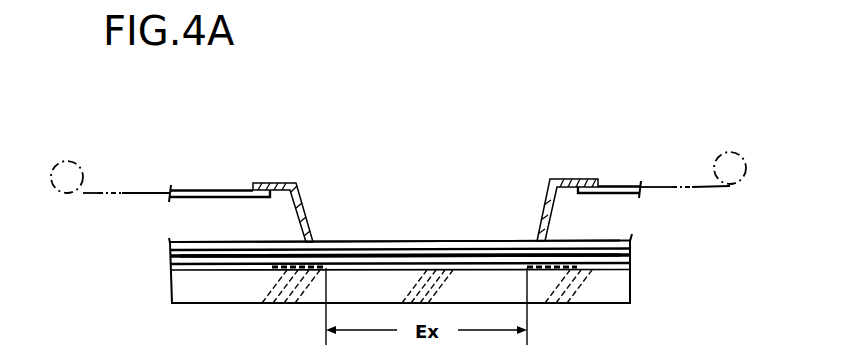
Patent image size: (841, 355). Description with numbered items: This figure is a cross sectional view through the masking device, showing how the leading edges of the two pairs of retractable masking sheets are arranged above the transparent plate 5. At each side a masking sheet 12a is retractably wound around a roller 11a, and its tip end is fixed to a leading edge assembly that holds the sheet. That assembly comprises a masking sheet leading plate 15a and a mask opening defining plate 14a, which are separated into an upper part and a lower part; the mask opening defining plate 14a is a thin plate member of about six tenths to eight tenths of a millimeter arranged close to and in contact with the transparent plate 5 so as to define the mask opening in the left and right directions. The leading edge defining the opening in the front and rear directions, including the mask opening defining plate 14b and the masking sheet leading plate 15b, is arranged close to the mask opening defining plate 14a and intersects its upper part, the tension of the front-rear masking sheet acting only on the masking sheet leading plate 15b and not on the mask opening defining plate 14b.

The transparent plate 5 is at (203, 296).
The roller 11a is at (66, 160).
The masking sheet 12a is at (195, 189).
The mask opening defining plate 14a is at (290, 296).
The mask opening defining plate 14b is at (371, 258).
The masking sheet leading plate 15a is at (298, 187).
The masking sheet leading plate 15b is at (460, 238).